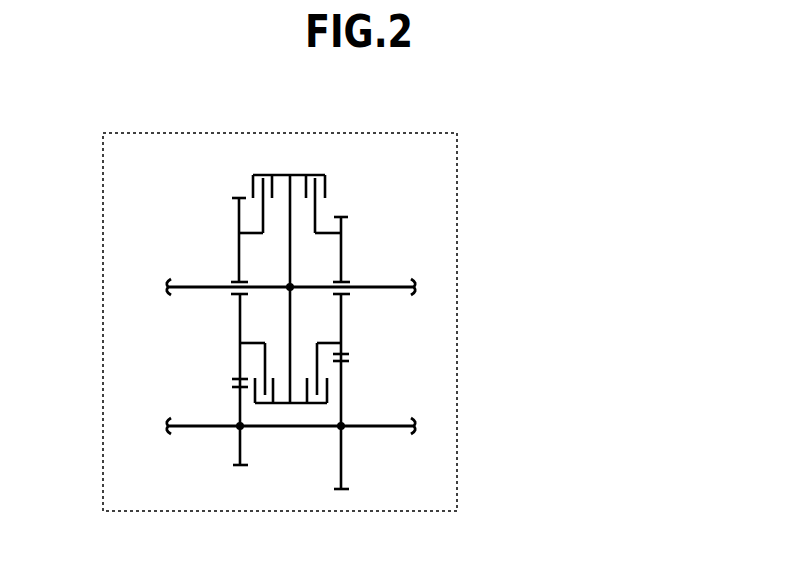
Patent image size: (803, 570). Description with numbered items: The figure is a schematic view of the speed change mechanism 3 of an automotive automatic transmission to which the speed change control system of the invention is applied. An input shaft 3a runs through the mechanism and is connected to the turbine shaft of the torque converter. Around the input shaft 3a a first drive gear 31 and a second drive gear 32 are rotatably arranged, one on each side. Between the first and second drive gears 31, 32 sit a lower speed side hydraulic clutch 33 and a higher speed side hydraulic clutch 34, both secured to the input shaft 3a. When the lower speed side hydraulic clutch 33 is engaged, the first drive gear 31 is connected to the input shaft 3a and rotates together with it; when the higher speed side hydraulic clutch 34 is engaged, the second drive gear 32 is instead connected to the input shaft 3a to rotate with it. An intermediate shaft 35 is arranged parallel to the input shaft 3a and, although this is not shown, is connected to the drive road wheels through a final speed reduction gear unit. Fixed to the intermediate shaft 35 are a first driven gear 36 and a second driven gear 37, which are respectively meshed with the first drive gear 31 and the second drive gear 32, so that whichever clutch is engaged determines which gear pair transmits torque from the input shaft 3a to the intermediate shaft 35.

The speed change mechanism 3 is at (457, 187).
The input shaft 3a is at (195, 287).
The first drive gear 31 is at (342, 257).
The second drive gear 32 is at (238, 213).
The lower speed side hydraulic clutch 33 is at (315, 173).
The higher speed side hydraulic clutch 34 is at (264, 174).
The intermediate shaft 35 is at (197, 427).
The first driven gear 36 is at (343, 460).
The second driven gear 37 is at (243, 441).